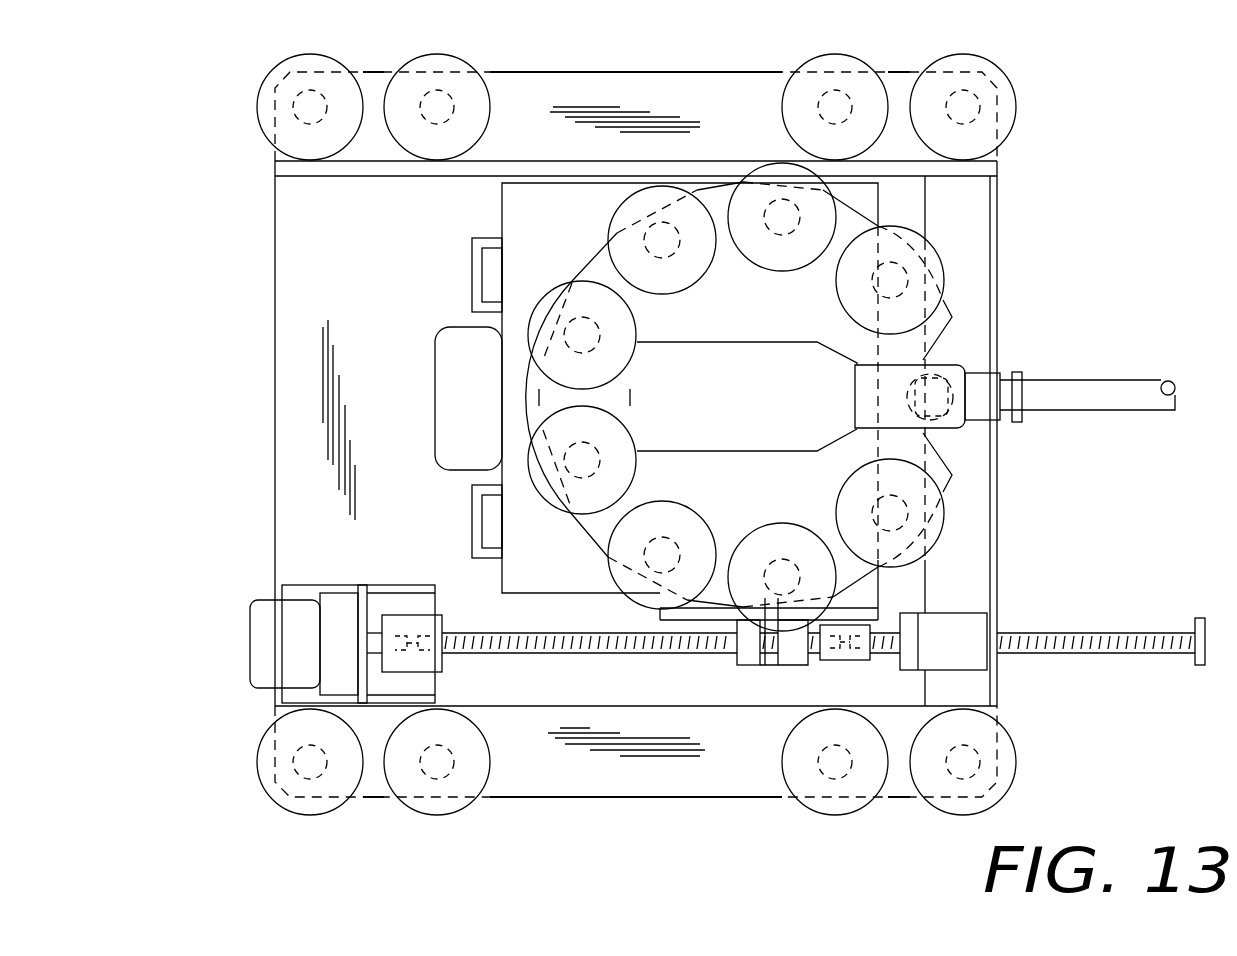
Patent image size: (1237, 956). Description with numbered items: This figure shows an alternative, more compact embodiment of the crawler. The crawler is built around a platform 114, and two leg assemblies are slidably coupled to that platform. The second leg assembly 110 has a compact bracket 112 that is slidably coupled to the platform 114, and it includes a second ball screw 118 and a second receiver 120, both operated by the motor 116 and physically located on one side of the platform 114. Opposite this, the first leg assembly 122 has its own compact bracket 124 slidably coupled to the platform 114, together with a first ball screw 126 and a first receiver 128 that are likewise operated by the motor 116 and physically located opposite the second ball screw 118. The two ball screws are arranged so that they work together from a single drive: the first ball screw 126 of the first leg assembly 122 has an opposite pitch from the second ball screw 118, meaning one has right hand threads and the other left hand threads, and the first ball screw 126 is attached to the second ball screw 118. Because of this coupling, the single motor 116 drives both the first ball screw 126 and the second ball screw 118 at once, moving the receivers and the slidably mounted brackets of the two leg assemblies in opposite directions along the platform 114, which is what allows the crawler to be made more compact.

The second leg assembly 110 is at (642, 780).
The compact bracket 112 is at (630, 88).
The platform 114 is at (390, 272).
The motor 116 is at (262, 628).
The second ball screw 118 is at (1136, 652).
The second receiver 120 is at (968, 627).
The first leg assembly 122 is at (716, 205).
The compact bracket 124 is at (522, 205).
The first ball screw 126 is at (500, 655).
The first receiver 128 is at (748, 658).